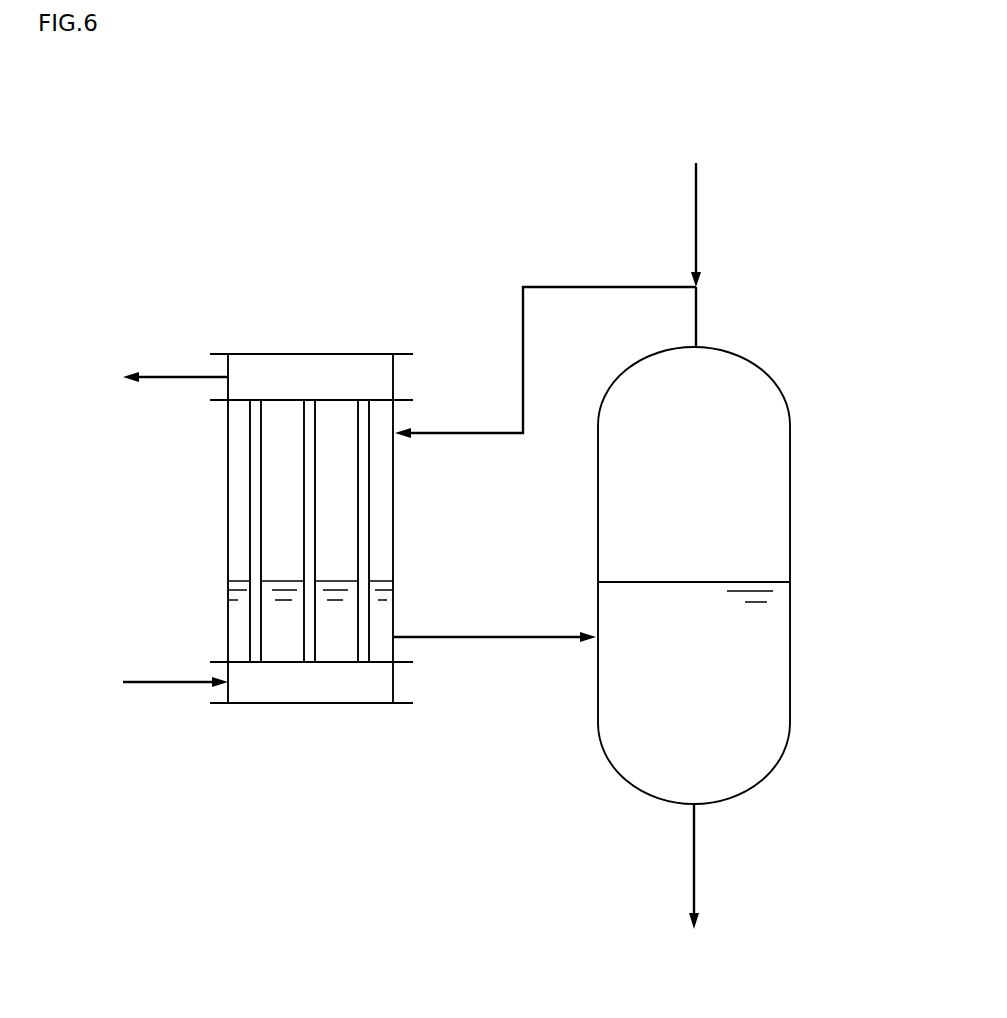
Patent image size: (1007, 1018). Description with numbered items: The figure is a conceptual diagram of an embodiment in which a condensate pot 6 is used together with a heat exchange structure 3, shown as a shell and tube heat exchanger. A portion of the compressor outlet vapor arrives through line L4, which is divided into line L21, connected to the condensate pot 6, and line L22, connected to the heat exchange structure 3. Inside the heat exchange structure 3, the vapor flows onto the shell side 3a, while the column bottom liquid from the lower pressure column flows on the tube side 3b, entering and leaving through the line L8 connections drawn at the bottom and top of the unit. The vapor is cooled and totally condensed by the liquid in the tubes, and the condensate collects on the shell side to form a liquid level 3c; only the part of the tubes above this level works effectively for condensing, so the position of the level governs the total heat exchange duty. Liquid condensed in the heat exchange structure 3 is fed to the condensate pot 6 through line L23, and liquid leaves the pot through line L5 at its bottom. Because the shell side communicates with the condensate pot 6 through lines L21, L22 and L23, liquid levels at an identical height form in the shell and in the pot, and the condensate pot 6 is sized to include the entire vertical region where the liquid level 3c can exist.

The heat exchange structure 3 is at (338, 352).
The shell side 3a is at (384, 478).
The tube side 3b is at (253, 524).
The liquid level 3c is at (380, 578).
The condensate pot 6 is at (694, 575).
The line L4 is at (699, 238).
The line L5 is at (698, 862).
The line L8 is at (142, 383).
The line L21 is at (699, 311).
The line L22 is at (574, 293).
The line L23 is at (501, 644).